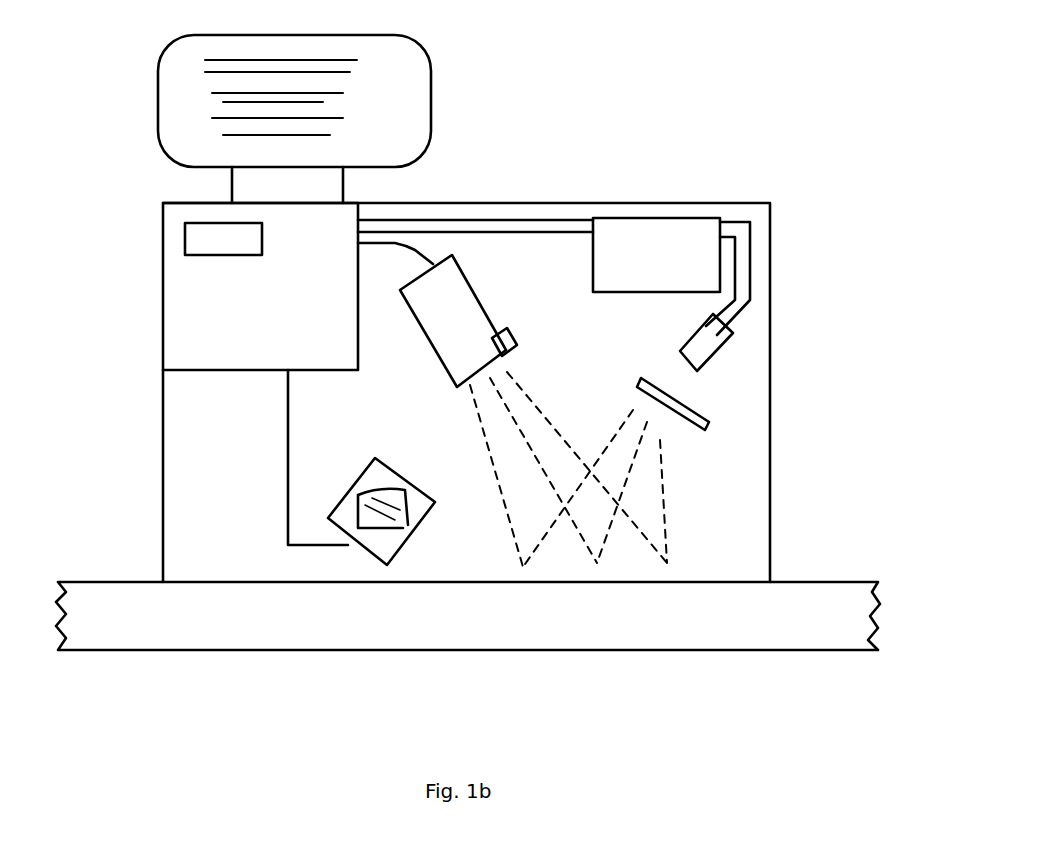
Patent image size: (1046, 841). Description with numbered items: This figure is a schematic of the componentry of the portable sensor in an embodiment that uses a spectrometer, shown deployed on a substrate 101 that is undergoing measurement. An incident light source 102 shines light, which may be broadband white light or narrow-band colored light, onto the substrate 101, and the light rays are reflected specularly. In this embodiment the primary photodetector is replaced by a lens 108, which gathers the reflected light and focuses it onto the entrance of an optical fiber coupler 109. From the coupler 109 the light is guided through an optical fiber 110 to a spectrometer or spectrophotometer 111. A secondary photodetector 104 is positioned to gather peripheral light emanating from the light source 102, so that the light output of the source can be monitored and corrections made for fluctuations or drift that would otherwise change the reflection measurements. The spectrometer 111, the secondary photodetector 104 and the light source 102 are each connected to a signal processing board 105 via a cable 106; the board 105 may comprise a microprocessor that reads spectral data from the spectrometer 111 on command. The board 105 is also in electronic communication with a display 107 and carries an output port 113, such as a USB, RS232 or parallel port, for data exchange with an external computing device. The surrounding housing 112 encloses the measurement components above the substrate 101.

The substrate 101 is at (692, 644).
The incident light source 102 is at (478, 320).
The secondary photodetector 104 is at (388, 508).
The signal processing board 105 is at (190, 335).
The cable 106 is at (452, 220).
The display 107 is at (392, 57).
The lens 108 is at (705, 426).
The optical fiber coupler 109 is at (743, 335).
The optical fiber 110 is at (763, 262).
The spectrometer 111 is at (642, 223).
The enclosure 112 is at (777, 510).
The output port 113 is at (190, 245).